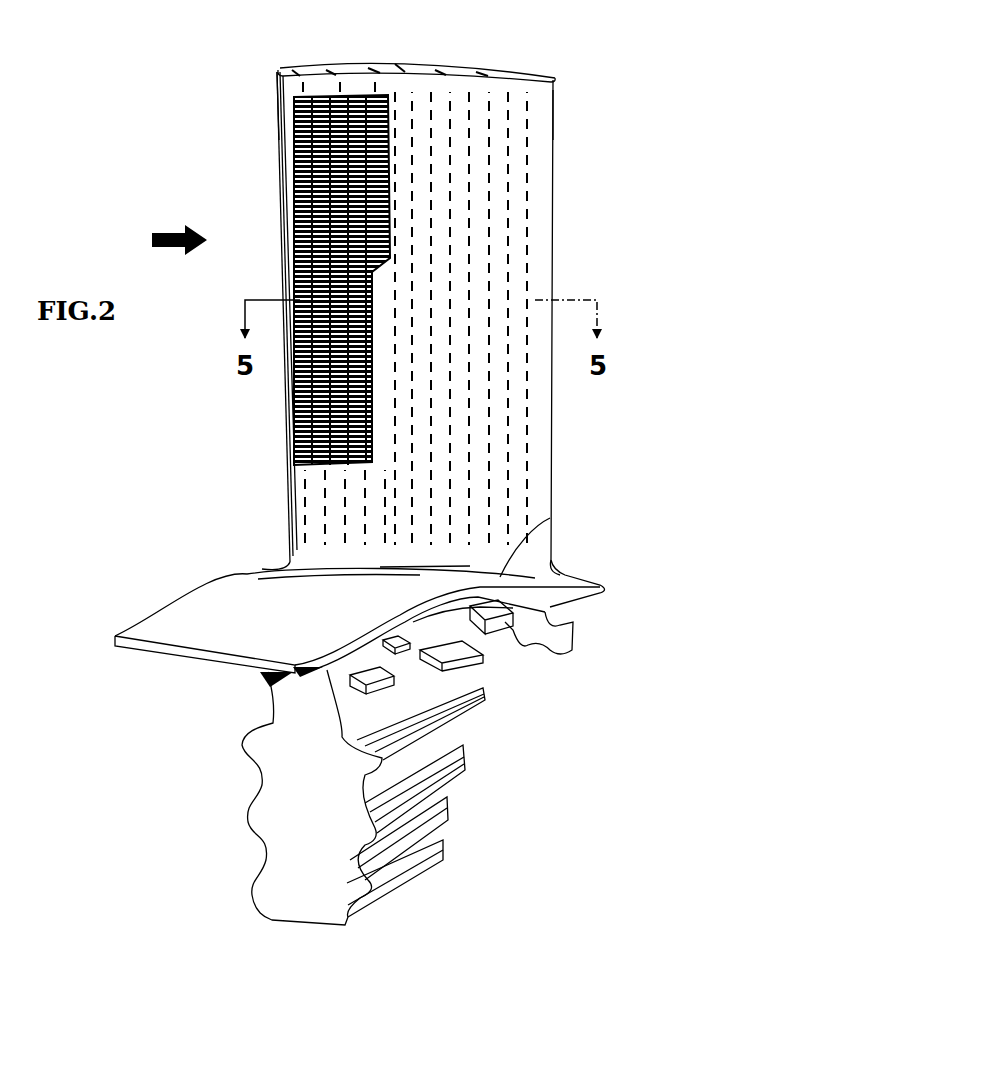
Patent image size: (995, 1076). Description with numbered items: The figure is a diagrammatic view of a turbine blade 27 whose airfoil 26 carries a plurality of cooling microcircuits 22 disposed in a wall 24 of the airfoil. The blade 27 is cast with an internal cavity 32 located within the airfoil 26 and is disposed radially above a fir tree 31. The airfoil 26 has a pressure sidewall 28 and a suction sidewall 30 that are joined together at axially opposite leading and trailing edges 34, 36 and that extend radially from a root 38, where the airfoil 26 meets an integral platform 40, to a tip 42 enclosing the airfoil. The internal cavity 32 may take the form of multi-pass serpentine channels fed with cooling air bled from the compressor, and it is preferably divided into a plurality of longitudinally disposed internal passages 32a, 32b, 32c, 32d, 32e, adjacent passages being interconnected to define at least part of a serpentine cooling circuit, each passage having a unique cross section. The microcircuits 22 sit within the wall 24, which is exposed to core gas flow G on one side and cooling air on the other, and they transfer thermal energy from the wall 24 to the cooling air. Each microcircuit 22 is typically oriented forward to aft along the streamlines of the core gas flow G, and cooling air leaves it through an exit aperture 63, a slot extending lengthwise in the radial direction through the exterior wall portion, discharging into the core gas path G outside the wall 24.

The microcircuit 22 is at (315, 217).
The wall 24 is at (540, 402).
The airfoil 26 is at (458, 556).
The turbine blade 27 is at (200, 362).
The pressure sidewall 28 is at (508, 90).
The suction sidewall 30 is at (405, 68).
The fir tree 31 is at (270, 860).
The internal cavity 32 is at (397, 58).
The internal passage 32a is at (372, 66).
The internal passage 32b is at (438, 70).
The internal passage 32c is at (330, 68).
The internal passage 32d is at (481, 70).
The internal passage 32e is at (296, 68).
The leading edge 34 is at (275, 165).
The trailing edge 36 is at (553, 138).
The root 38 is at (550, 518).
The platform 40 is at (172, 633).
The tip 42 is at (500, 72).
The exit aperture 63 is at (530, 188).
The core gas flow G is at (162, 239).